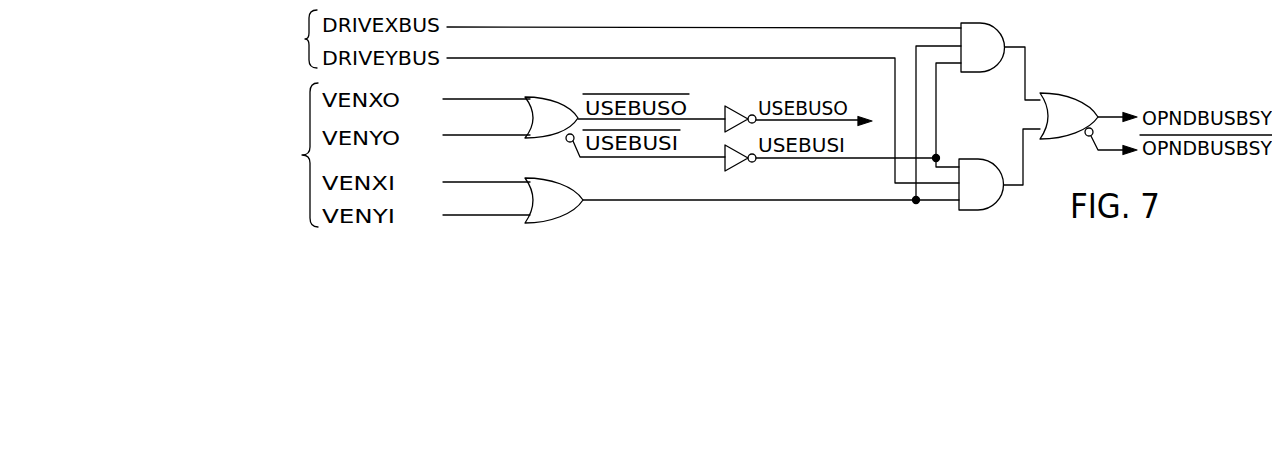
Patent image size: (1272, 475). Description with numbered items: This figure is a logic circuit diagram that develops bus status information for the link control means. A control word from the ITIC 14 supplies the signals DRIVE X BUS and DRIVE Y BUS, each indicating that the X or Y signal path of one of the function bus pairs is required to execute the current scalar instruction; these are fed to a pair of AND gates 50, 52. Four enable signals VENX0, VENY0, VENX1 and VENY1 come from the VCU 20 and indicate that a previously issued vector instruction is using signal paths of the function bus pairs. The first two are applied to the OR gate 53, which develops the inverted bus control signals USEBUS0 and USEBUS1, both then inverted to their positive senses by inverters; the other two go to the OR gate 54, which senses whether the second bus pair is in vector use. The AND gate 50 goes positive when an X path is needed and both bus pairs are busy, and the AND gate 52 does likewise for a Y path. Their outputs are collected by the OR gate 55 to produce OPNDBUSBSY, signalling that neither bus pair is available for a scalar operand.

The ITIC 14 is at (218, 39).
The VCU 20 is at (219, 155).
The AND gate 50 is at (1000, 31).
The AND gate 52 is at (976, 158).
The OR gate 53 is at (549, 93).
The OR gate 54 is at (547, 176).
The OR gate 55 is at (1067, 91).